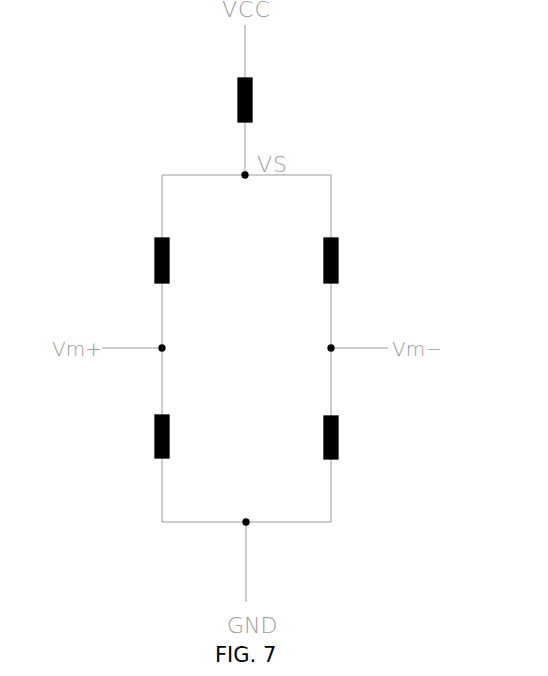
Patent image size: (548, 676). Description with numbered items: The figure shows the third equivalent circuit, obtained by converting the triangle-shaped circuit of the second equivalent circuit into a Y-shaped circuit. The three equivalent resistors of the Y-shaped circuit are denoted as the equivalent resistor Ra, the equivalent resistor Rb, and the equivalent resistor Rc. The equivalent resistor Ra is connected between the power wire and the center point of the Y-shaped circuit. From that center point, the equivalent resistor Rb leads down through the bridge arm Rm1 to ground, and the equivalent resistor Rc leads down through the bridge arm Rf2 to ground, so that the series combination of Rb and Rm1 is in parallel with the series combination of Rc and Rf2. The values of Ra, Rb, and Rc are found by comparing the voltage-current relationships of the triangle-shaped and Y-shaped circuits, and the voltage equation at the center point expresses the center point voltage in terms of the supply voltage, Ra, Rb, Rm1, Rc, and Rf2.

The equivalent resistor Ra is at (224, 100).
The equivalent resistor Rb is at (141, 260).
The equivalent resistor Rc is at (347, 260).
The bridge arm Rm1 is at (138, 436).
The bridge arm Rf2 is at (354, 437).